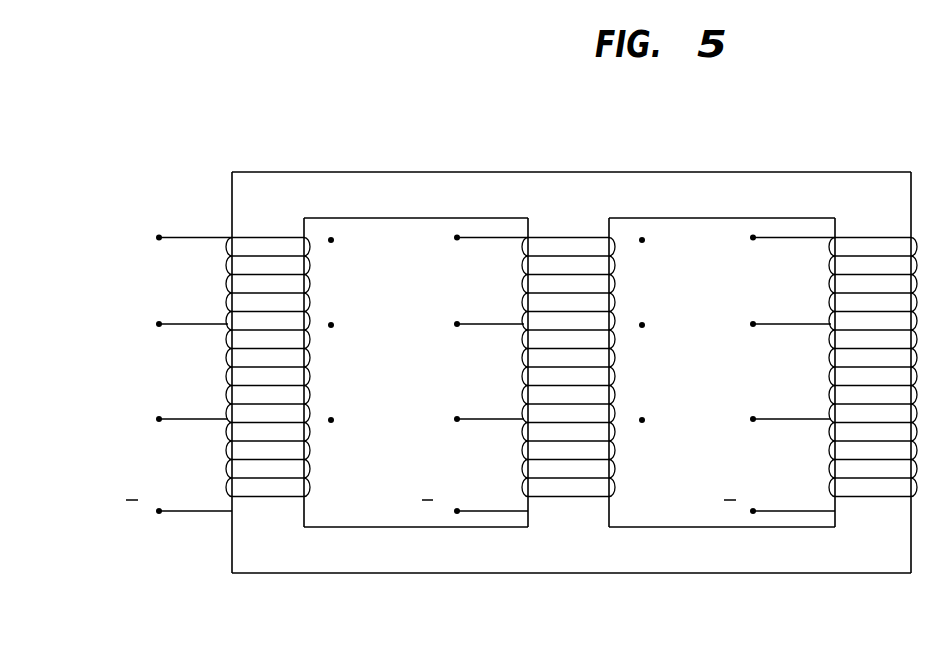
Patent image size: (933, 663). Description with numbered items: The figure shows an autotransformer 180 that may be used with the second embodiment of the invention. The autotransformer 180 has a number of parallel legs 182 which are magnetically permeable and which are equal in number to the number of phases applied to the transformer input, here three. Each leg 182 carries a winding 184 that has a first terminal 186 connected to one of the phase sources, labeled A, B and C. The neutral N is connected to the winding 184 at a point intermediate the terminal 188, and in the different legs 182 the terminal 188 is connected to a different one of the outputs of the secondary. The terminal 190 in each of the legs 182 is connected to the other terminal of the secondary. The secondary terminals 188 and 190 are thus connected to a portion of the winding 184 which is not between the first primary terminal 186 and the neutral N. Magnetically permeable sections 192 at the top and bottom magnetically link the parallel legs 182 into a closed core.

The autotransformer 180 is at (531, 141).
The parallel legs 182 is at (273, 513).
The winding 184 is at (268, 233).
The first terminal 186 is at (159, 235).
The terminal 188 is at (159, 514).
The terminal 190 is at (159, 321).
The magnetically permeable sections 192 is at (394, 203).